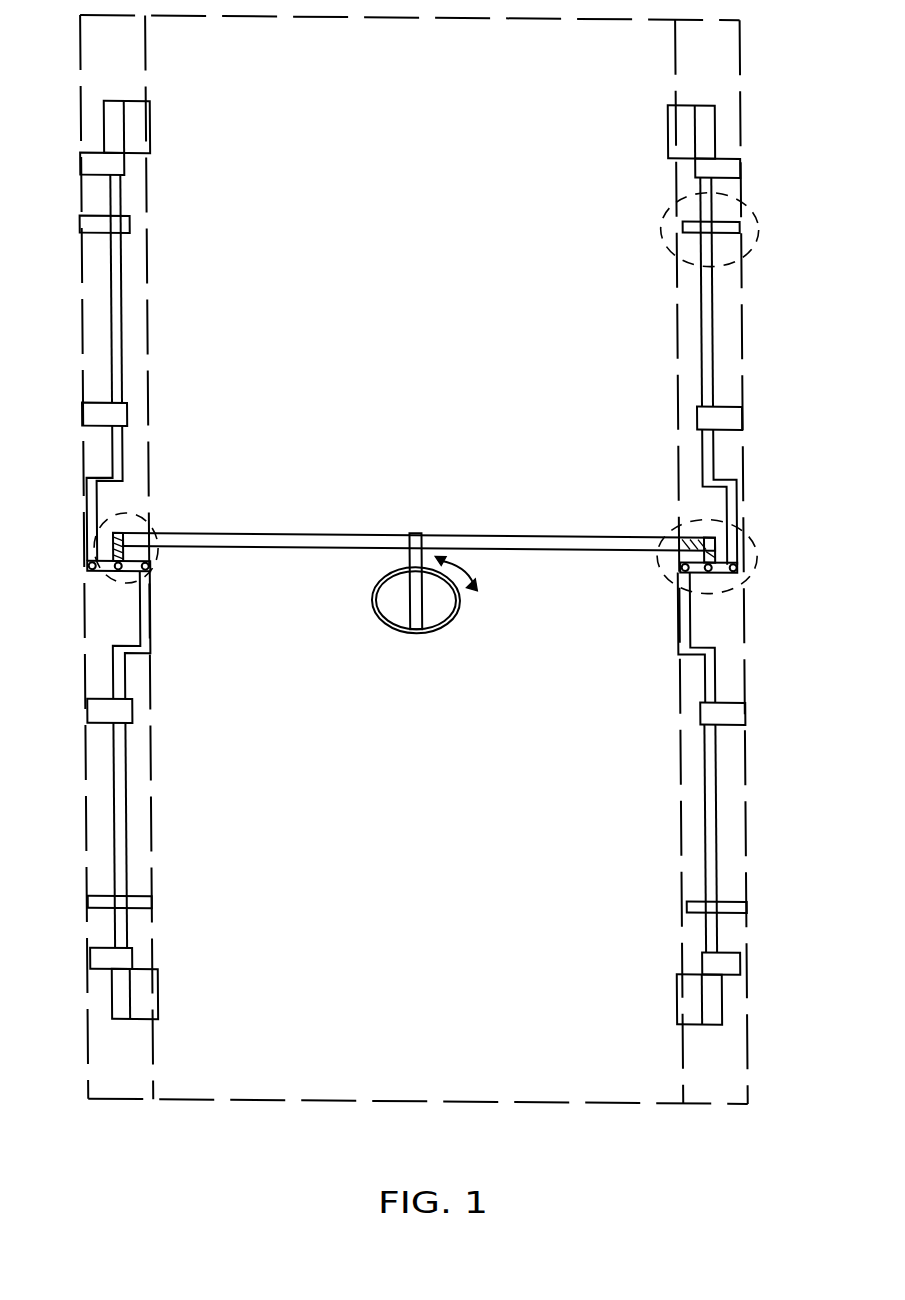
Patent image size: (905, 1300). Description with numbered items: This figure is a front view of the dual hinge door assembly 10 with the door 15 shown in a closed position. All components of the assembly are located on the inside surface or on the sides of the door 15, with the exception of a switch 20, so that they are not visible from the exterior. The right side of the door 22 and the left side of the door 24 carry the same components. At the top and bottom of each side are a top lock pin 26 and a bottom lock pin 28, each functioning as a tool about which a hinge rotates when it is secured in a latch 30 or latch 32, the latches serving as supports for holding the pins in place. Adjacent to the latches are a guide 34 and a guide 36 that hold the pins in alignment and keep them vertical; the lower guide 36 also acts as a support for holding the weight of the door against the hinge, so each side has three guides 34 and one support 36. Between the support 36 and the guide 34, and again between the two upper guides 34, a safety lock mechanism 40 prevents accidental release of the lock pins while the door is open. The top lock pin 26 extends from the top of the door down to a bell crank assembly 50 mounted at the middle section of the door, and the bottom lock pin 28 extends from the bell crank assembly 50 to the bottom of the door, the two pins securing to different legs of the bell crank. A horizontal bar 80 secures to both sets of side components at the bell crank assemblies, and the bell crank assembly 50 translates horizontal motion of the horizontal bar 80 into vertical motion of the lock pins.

The dual hinge door assembly 10 is at (798, 656).
The door 15 is at (602, 780).
The switch 20 is at (454, 596).
The right side of the door 22 is at (720, 1072).
The left side of the door 24 is at (100, 1067).
The top lock pin 26 is at (108, 294).
The bottom lock pin 28 is at (107, 847).
The latch 30 is at (106, 126).
The latch 32 is at (104, 994).
The guide 34 is at (79, 165).
The guide (support) 36 is at (85, 954).
The safety lock mechanism 40 is at (77, 222).
The bell crank assembly 50 is at (84, 571).
The horizontal bar 80 is at (259, 544).